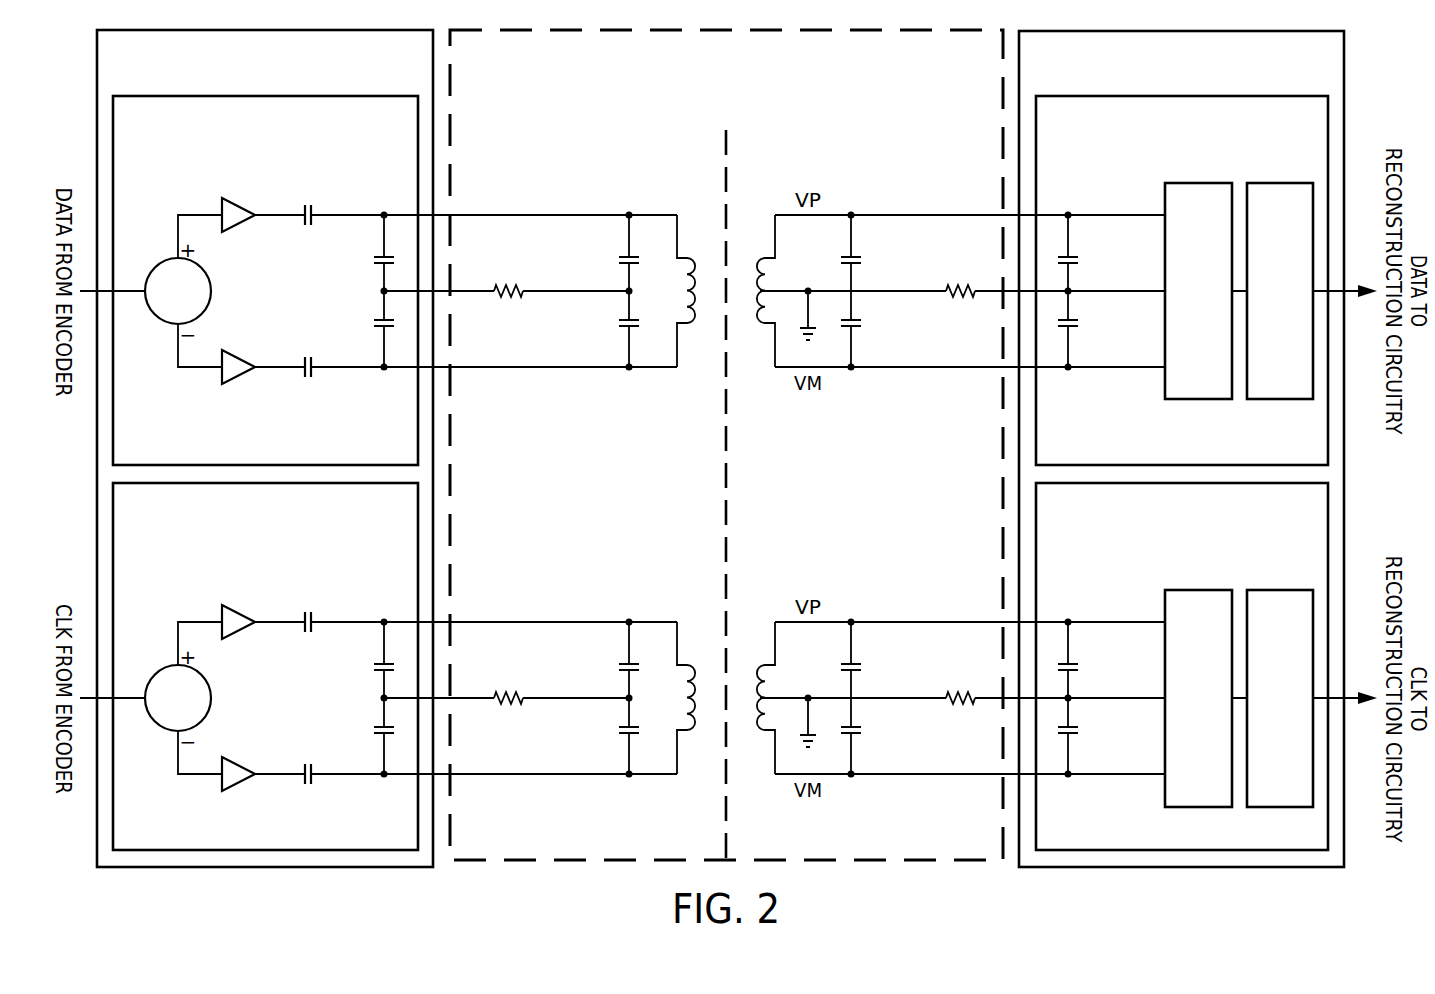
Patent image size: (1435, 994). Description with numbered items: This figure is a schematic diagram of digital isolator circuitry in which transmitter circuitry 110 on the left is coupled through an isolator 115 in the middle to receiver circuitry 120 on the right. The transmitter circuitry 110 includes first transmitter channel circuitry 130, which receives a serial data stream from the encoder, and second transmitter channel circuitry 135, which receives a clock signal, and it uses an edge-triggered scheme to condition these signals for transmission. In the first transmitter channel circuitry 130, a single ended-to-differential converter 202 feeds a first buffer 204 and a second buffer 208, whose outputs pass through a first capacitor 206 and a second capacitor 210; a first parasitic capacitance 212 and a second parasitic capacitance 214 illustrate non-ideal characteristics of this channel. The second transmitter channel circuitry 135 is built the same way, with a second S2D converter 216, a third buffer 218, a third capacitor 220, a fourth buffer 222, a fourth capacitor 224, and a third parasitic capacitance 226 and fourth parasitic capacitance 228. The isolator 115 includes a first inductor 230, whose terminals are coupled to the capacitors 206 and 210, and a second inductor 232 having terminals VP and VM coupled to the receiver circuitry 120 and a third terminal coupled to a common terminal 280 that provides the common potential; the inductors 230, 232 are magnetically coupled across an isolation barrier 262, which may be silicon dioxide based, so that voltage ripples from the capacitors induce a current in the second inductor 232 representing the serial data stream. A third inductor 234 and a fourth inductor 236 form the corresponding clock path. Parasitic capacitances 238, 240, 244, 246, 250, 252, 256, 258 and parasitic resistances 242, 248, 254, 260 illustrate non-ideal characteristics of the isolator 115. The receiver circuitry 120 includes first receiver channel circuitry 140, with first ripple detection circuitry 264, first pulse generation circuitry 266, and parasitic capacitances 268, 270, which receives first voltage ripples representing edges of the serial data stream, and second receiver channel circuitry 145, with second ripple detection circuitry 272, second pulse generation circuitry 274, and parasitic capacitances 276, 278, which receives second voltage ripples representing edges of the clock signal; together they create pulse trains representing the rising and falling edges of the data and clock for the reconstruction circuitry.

The transmitter circuitry 110 is at (130, 74).
The isolator 115 is at (873, 82).
The receiver circuitry 120 is at (1272, 75).
The first transmitter channel circuitry 130 is at (138, 143).
The second transmitter channel circuitry 135 is at (143, 528).
The first receiver channel circuitry 140 is at (1265, 150).
The second receiver channel circuitry 145 is at (1094, 583).
The single ended-to-differential (S2D) converter 202 is at (163, 264).
The first buffer 204 is at (240, 227).
The first capacitor 206 is at (307, 203).
The second buffer 208 is at (241, 356).
The second capacitor 210 is at (306, 380).
The first parasitic capacitance 212 is at (372, 258).
The second parasitic capacitance 214 is at (372, 321).
The second S2D converter 216 is at (168, 729).
The third buffer 218 is at (240, 634).
The third capacitor 220 is at (307, 611).
The fourth buffer 222 is at (241, 763).
The fourth capacitor 224 is at (307, 786).
The third parasitic capacitance 226 is at (372, 666).
The fourth parasitic capacitance 228 is at (372, 730).
The first inductor 230 is at (703, 256).
The second inductor 232 is at (751, 256).
The third inductor 234 is at (703, 733).
The fourth inductor 236 is at (751, 733).
The fifth parasitic capacitance 238 is at (617, 257).
The sixth parasitic capacitance 240 is at (617, 322).
The first parasitic resistance 242 is at (509, 284).
The seventh parasitic capacitance 244 is at (617, 665).
The eighth parasitic capacitance 246 is at (617, 730).
The second parasitic resistance 248 is at (509, 705).
The ninth parasitic capacitance 250 is at (863, 262).
The tenth parasitic capacitance 252 is at (863, 325).
The third parasitic resistance 254 is at (959, 285).
The eleventh parasitic capacitance 256 is at (863, 669).
The twelfth parasitic capacitance 258 is at (863, 733).
The fourth parasitic resistance 260 is at (962, 705).
The isolation barrier 262 is at (724, 481).
The first ripple detection circuitry 264 is at (1200, 400).
The first pulse generation circuitry 266 is at (1283, 400).
The thirteenth parasitic capacitance 268 is at (1080, 258).
The fourteenth parasitic capacitance 270 is at (1080, 322).
The second ripple detection circuitry 272 is at (1200, 590).
The second pulse generation circuitry 274 is at (1283, 590).
The fifteenth parasitic capacitance 276 is at (1080, 669).
The sixteenth parasitic capacitance 278 is at (1080, 733).
The common terminal 280 is at (808, 289).